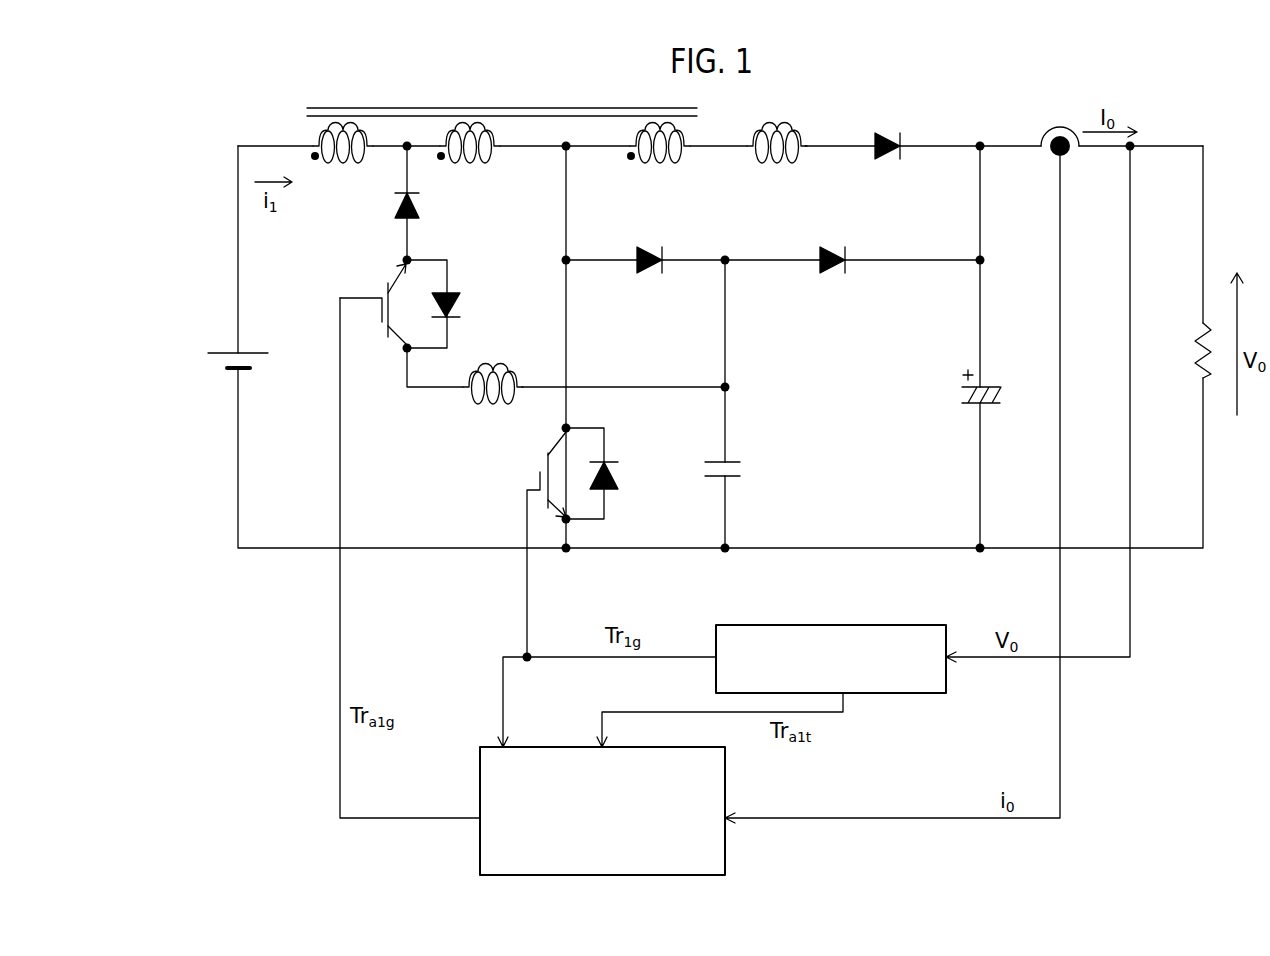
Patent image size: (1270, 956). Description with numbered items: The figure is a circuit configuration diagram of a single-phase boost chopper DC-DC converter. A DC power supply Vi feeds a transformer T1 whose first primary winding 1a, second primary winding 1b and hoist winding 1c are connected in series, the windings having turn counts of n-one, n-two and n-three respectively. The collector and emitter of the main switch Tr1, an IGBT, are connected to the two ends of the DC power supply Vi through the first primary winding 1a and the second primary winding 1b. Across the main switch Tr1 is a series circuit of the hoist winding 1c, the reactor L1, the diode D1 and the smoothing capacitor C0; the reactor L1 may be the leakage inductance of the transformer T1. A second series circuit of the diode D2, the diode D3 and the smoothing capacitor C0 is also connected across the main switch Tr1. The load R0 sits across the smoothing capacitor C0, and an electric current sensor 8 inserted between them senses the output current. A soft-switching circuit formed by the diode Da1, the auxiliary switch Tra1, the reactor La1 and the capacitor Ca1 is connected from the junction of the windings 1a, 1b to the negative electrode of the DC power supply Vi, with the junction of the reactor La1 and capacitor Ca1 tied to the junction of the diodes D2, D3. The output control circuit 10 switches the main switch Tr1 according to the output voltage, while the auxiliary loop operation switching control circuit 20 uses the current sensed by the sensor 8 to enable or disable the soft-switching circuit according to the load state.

The first primary winding 1a is at (334, 170).
The second primary winding 1b is at (480, 170).
The hoist winding 1c is at (683, 170).
The electric current sensor 8 is at (1062, 126).
The output control circuit 10 is at (832, 624).
The auxiliary loop operation switching control circuit 20 is at (555, 746).
The transformer T1 is at (488, 111).
The reactor L1 is at (777, 127).
The diode D1 is at (890, 160).
The diode D2 is at (649, 276).
The diode D3 is at (835, 276).
The diode Da1 is at (426, 211).
The auxiliary switch Tra1 is at (399, 304).
The main switch Tr1 is at (563, 544).
The reactor La1 is at (493, 373).
The capacitor Ca1 is at (702, 464).
The smoothing capacitor C0 is at (966, 392).
The load R0 is at (1182, 350).
The DC power supply Vi is at (205, 316).